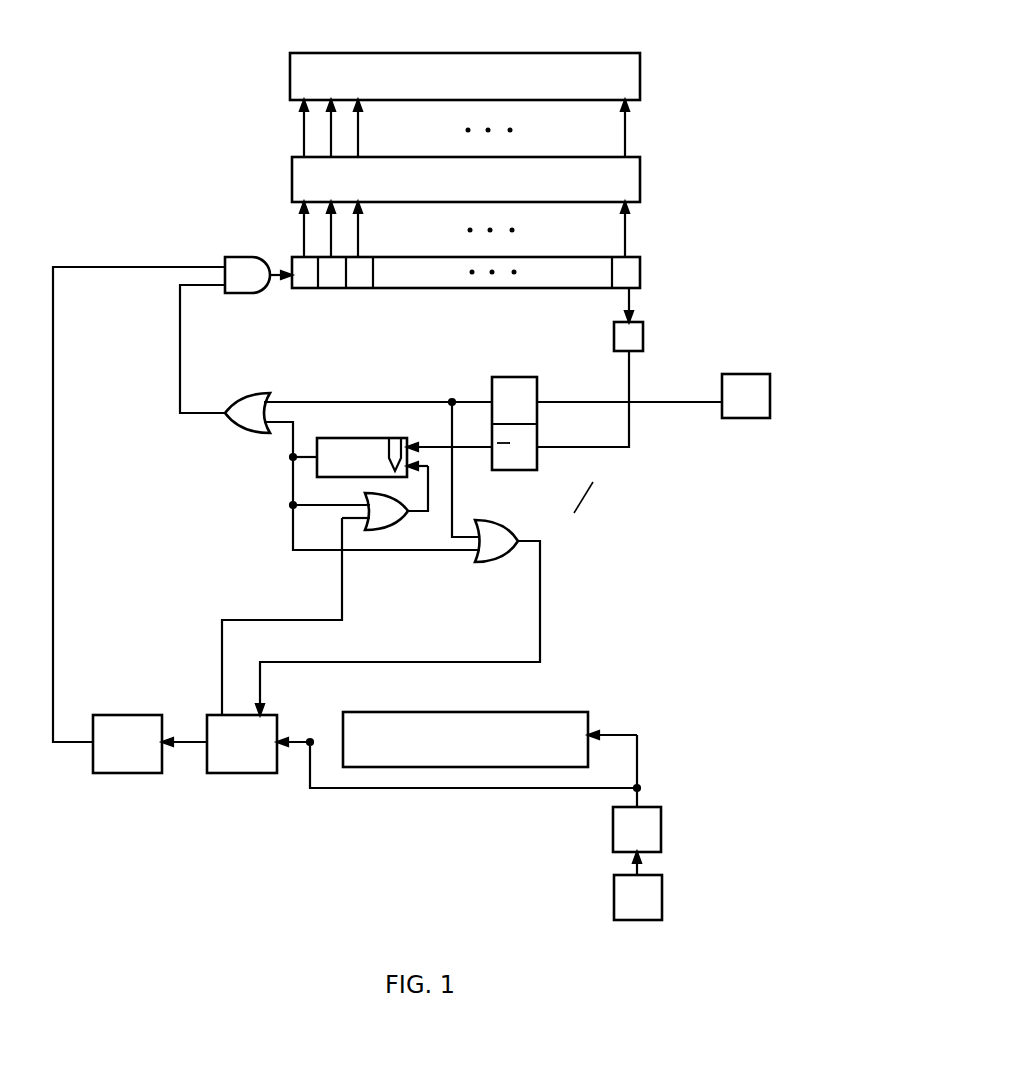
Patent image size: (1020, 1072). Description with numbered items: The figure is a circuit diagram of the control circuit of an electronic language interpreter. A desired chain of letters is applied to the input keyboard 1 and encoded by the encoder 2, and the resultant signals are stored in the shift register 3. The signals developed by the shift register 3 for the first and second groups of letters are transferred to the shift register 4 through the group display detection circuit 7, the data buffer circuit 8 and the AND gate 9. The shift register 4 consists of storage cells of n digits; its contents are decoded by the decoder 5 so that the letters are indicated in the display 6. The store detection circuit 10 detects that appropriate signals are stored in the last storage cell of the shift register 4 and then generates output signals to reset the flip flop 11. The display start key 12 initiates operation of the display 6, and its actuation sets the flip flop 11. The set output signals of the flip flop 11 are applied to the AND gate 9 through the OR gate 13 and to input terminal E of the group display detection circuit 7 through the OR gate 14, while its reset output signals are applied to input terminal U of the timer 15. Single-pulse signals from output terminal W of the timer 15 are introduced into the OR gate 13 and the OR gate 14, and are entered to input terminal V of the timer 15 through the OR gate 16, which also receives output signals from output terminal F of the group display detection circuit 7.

The input keyboard 1 is at (650, 893).
The encoder 2 is at (650, 831).
The shift register 3 is at (573, 712).
The shift register 4 is at (628, 273).
The decoder 5 is at (629, 177).
The display 6 is at (578, 58).
The group display detection circuit 7 is at (247, 774).
The data buffer circuit 8 is at (133, 774).
The AND gate 9 is at (242, 266).
The store detection circuit 10 is at (634, 336).
The flip flop 11 is at (522, 471).
The display start key 12 is at (745, 409).
The OR gate 13 is at (255, 406).
The OR gate 14 is at (500, 549).
The timer 15 is at (362, 445).
The OR gate 16 is at (387, 523).